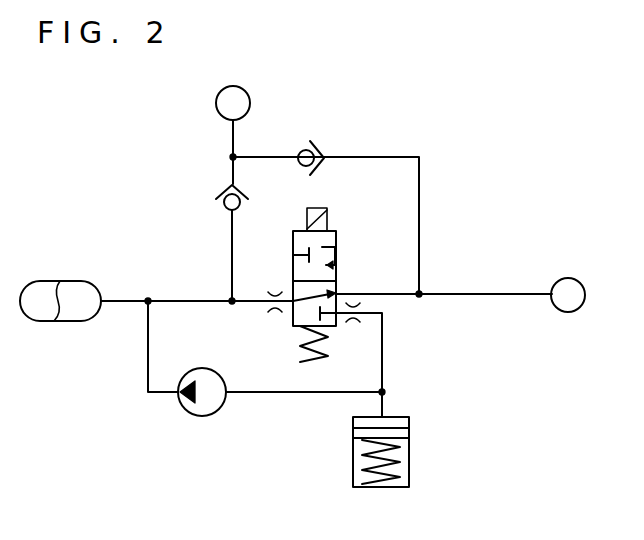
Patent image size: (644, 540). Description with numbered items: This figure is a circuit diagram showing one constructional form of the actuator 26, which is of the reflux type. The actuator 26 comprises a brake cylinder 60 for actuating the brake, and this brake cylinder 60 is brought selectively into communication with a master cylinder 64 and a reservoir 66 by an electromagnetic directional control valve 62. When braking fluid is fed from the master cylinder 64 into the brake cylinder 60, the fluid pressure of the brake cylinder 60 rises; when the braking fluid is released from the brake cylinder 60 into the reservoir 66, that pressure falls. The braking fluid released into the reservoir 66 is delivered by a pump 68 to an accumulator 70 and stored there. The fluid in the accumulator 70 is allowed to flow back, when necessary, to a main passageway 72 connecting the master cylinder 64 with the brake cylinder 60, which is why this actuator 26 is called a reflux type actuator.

The actuator 26 is at (480, 137).
The brake cylinder 60 is at (568, 278).
The electromagnetic directional control valve 62 is at (336, 236).
The master cylinder 64 is at (252, 100).
The reservoir 66 is at (411, 460).
The pump 68 is at (202, 416).
The accumulator 70 is at (80, 281).
The main passageway 72 is at (232, 258).